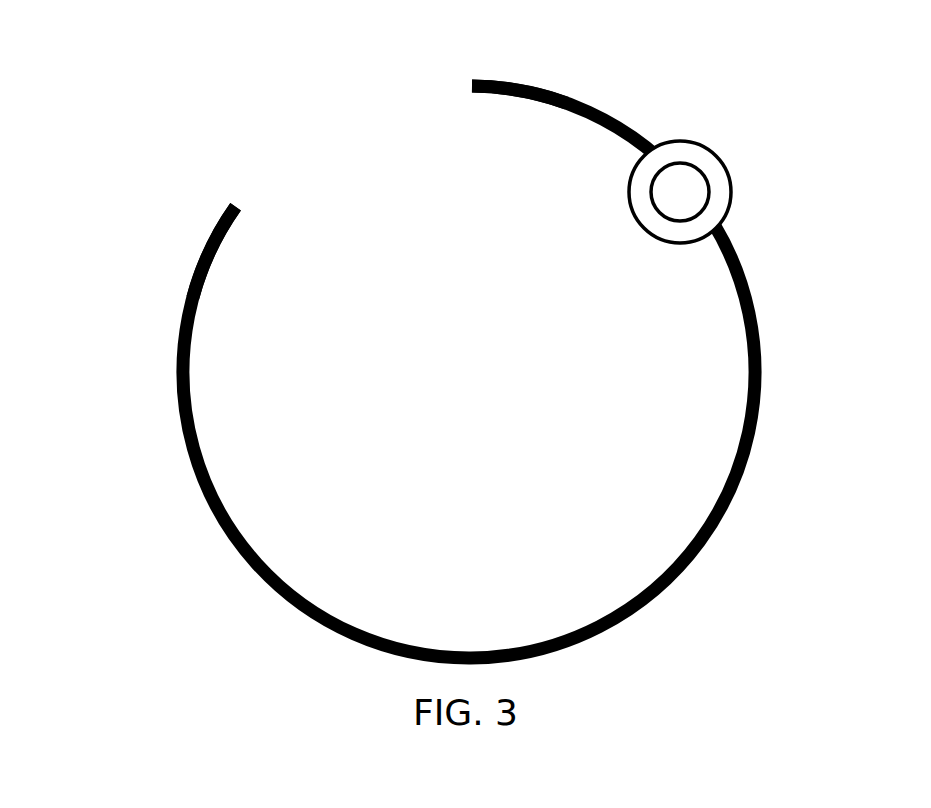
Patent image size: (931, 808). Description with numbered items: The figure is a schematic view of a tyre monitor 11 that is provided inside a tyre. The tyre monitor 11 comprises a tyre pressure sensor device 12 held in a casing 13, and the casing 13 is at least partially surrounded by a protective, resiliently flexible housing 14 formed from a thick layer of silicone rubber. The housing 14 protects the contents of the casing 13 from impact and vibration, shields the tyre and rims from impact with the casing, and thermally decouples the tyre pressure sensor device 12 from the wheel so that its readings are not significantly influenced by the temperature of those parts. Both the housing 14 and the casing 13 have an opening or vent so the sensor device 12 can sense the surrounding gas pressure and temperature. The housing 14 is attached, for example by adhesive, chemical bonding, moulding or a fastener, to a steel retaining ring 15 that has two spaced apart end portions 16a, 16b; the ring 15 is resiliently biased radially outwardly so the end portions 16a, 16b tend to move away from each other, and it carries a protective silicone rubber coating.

The tyre monitor 11 is at (436, 351).
The tyre pressure sensor device 12 is at (725, 146).
The casing 13 is at (710, 180).
The protective, resiliently flexible housing 14 is at (733, 209).
The retaining ring 15 is at (501, 354).
The end portion 16a is at (235, 200).
The end portion 16b is at (468, 86).